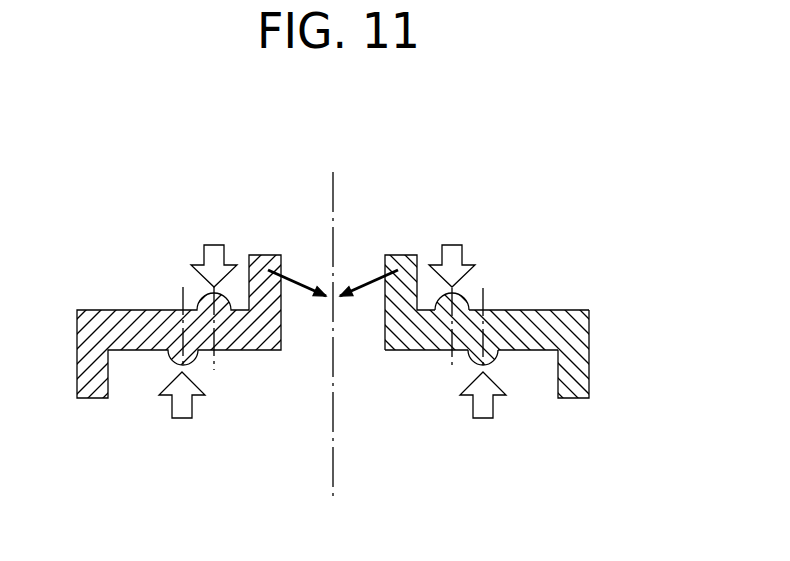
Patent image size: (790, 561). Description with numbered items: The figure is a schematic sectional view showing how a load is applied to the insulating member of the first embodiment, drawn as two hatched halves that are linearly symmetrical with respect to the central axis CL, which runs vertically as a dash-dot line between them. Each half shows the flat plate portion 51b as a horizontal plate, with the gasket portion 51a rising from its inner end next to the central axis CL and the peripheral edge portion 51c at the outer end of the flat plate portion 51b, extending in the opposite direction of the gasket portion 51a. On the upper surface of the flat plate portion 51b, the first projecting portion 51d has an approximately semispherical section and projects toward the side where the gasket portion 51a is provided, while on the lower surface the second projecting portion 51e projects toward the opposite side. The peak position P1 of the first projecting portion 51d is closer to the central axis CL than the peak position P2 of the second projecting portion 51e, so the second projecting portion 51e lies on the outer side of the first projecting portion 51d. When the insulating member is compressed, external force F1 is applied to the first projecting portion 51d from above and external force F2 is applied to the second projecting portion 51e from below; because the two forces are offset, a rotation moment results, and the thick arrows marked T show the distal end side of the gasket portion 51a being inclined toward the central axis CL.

The gasket portion 51a is at (410, 283).
The flat plate portion 51b is at (535, 330).
The peripheral edge portion 51c is at (573, 376).
The first projecting portion 51d is at (467, 302).
The second projecting portion 51e is at (497, 357).
The central axis CL is at (334, 200).
The thickness direction T is at (293, 279).
The peak position of the first projecting portion P1 is at (215, 357).
The peak position of the second projecting portion P2 is at (178, 302).
The external force F1 is at (333, 247).
The external force F2 is at (332, 414).